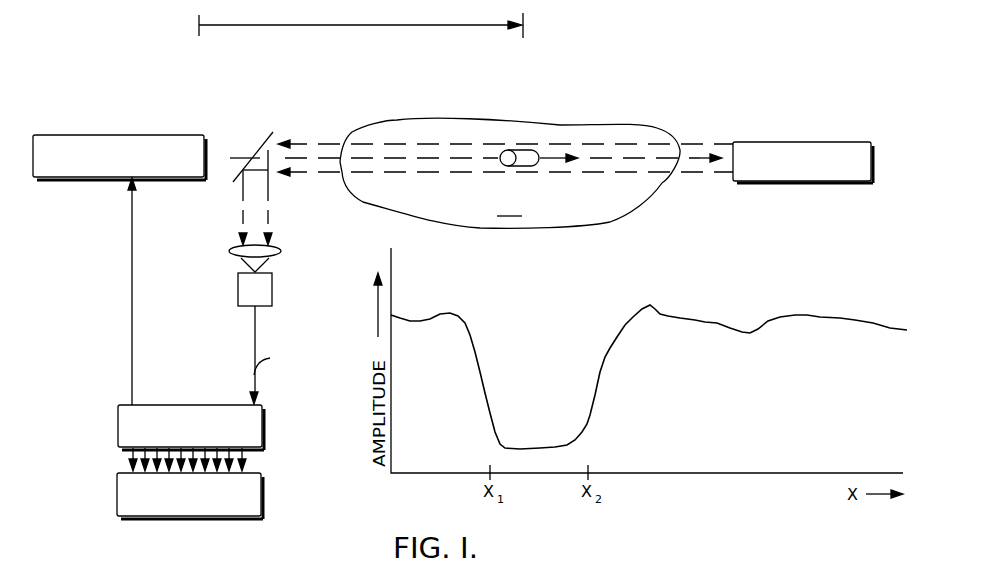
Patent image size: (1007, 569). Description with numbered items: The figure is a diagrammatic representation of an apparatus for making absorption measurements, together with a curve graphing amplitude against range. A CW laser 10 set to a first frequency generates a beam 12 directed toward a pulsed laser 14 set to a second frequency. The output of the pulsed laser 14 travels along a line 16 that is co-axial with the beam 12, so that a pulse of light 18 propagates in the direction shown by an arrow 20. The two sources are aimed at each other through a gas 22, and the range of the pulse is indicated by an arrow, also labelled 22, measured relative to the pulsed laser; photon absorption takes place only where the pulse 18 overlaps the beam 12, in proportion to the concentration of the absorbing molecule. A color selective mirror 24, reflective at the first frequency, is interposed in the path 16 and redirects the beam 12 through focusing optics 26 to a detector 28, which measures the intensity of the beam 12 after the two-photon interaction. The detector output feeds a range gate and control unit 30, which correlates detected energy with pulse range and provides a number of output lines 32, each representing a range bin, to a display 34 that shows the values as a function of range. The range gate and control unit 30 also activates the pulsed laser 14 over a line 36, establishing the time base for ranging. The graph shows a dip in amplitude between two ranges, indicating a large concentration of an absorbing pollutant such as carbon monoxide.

The CW laser 10 is at (832, 142).
The beam 12 is at (690, 147).
The pulsed laser 14 is at (165, 135).
The line 16 is at (205, 158).
The pulse of light 18 is at (520, 150).
The arrow 20 is at (560, 152).
The gas 22 is at (440, 26).
The color selective mirror 24 is at (264, 131).
The focusing optics 26 is at (280, 250).
The detector 28 is at (272, 292).
The range gate and control unit 30 is at (173, 405).
The output lines 32 is at (242, 460).
The display 34 is at (263, 492).
The line 36 is at (132, 292).